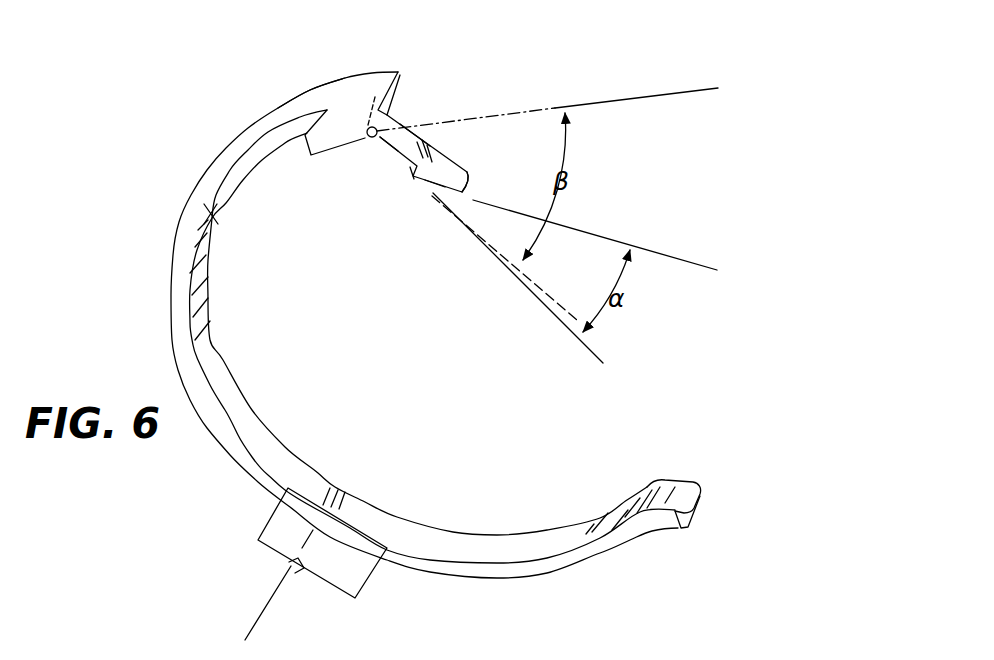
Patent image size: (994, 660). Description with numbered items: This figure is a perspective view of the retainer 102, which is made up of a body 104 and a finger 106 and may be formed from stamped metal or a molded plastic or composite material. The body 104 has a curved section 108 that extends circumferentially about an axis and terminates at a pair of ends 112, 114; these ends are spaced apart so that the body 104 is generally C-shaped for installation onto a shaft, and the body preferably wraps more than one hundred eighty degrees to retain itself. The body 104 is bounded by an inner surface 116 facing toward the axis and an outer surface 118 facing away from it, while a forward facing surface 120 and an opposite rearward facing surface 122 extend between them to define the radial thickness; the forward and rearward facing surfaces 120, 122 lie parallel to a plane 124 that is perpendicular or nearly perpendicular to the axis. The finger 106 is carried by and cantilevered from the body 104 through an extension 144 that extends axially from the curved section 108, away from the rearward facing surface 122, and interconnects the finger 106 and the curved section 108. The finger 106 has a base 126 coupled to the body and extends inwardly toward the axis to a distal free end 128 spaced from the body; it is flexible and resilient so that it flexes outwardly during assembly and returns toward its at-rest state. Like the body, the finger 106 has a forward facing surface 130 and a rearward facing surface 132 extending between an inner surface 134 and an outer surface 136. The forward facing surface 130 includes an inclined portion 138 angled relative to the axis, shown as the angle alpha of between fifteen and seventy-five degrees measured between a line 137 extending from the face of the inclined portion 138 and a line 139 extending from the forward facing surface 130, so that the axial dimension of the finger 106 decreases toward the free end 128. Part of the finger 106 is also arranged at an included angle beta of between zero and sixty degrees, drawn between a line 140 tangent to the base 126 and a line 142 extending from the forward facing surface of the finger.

The retainer 102 is at (226, 116).
The body 104 is at (334, 476).
The finger 106 is at (438, 133).
The curved section 108 is at (455, 530).
The first end 112 is at (700, 502).
The second end 114 is at (402, 88).
The inner surface 116 is at (213, 368).
The outer surface 118 is at (295, 108).
The forward facing surface 120 is at (212, 220).
The rearward facing surface 122 is at (333, 86).
The plane 124 is at (347, 570).
The base 126 is at (365, 137).
The free end 128 is at (468, 193).
The forward facing surface 130 is at (385, 153).
The rearward facing surface 132 is at (412, 120).
The inner surface 134 is at (398, 167).
The outer surface 136 is at (445, 145).
The line 137 is at (670, 254).
The inclined portion 138 is at (436, 190).
The line 139 is at (597, 353).
The line 140 is at (620, 100).
The line 142 is at (538, 273).
The extension 144 is at (315, 132).